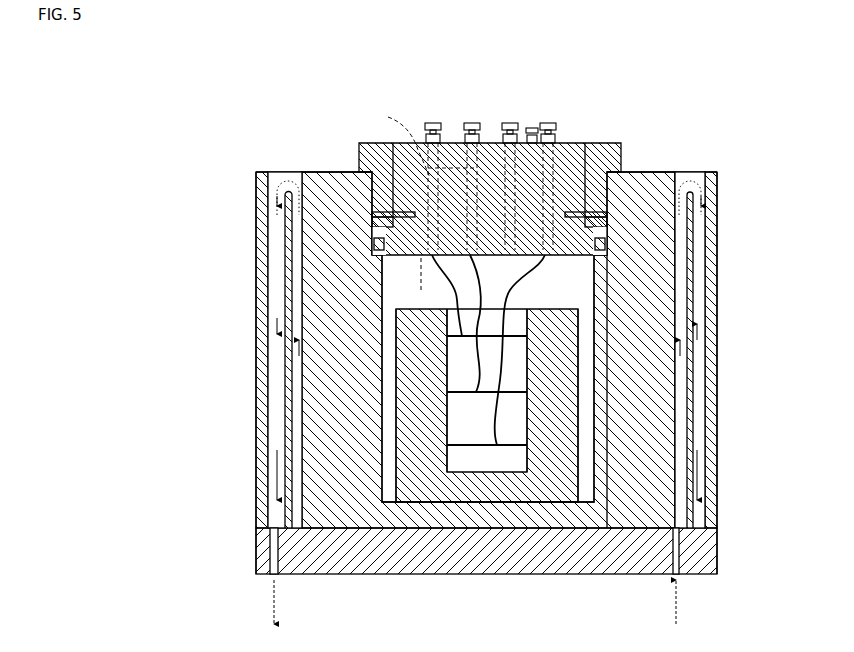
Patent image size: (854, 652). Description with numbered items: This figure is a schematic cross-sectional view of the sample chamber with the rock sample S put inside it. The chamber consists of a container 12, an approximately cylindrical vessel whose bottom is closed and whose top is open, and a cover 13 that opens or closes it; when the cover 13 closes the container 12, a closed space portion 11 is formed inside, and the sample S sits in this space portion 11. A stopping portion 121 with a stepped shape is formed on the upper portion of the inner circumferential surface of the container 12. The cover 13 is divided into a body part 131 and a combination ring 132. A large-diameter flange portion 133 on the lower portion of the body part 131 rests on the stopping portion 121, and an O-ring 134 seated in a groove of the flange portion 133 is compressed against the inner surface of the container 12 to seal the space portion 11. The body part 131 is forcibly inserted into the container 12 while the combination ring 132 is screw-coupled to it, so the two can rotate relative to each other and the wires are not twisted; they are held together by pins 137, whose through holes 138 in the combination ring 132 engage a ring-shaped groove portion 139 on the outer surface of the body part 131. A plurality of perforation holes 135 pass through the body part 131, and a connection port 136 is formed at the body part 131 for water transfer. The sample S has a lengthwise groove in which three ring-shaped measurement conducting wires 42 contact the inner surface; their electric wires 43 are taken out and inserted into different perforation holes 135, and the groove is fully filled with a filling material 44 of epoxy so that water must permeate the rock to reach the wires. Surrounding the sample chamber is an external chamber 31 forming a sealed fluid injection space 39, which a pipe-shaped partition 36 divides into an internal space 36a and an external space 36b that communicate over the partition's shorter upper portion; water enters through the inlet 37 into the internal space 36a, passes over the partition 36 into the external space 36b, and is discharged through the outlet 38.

The space portion 11 is at (590, 490).
The container 12 is at (337, 513).
The cover 13 is at (497, 158).
The body part 131 is at (577, 143).
The combination ring 132 is at (578, 88).
The flange portion 133 is at (610, 245).
The O-ring 134 is at (372, 245).
The perforation holes 135 is at (394, 140).
The connection port 136 is at (520, 128).
The pins 137 is at (408, 257).
The through holes 138 is at (590, 256).
The ring-shaped groove portion 139 is at (425, 283).
The stopping portion 121 is at (650, 278).
The external chamber 31 is at (712, 462).
The partition 36 is at (703, 352).
The internal space 36a is at (297, 432).
The external space 36b is at (275, 390).
The inlet 37 is at (678, 560).
The outlet 38 is at (272, 550).
The fluid injection space 39 is at (482, 350).
The measurement conducting wires 42 is at (440, 402).
The electric wires 43 is at (455, 330).
The filling material 44 is at (517, 427).
The rock sample S is at (575, 345).